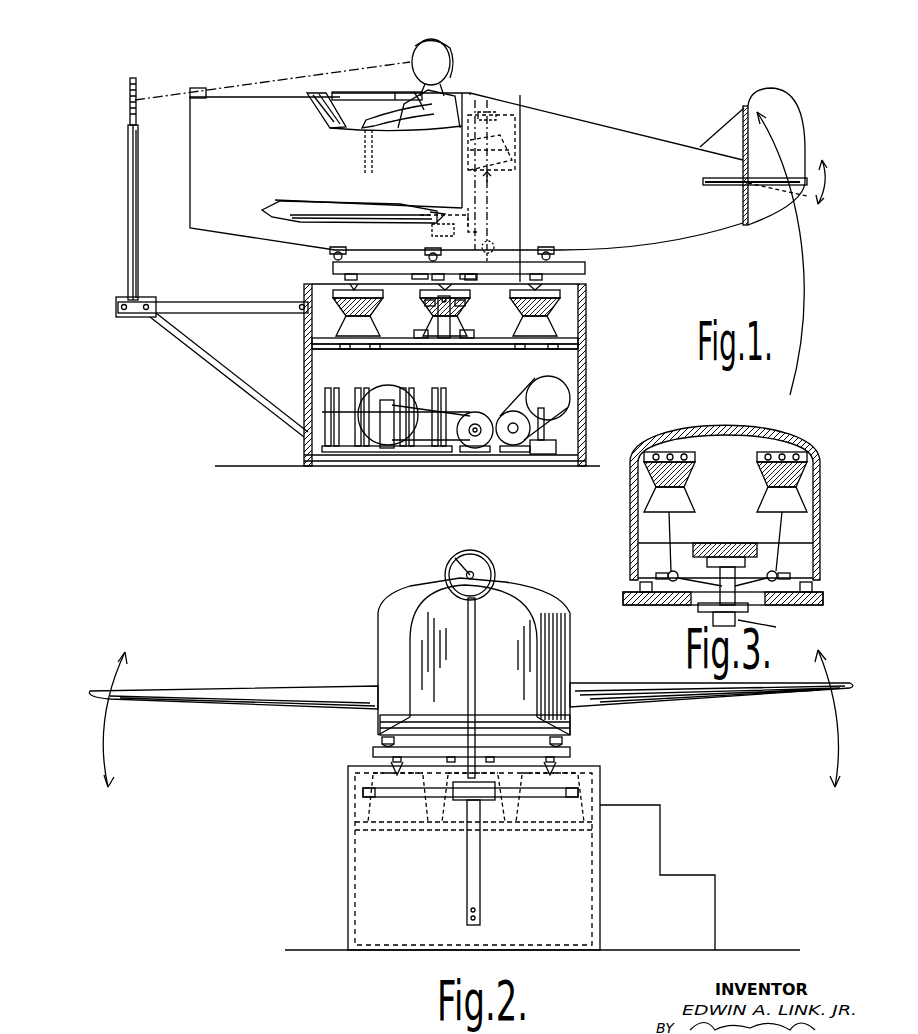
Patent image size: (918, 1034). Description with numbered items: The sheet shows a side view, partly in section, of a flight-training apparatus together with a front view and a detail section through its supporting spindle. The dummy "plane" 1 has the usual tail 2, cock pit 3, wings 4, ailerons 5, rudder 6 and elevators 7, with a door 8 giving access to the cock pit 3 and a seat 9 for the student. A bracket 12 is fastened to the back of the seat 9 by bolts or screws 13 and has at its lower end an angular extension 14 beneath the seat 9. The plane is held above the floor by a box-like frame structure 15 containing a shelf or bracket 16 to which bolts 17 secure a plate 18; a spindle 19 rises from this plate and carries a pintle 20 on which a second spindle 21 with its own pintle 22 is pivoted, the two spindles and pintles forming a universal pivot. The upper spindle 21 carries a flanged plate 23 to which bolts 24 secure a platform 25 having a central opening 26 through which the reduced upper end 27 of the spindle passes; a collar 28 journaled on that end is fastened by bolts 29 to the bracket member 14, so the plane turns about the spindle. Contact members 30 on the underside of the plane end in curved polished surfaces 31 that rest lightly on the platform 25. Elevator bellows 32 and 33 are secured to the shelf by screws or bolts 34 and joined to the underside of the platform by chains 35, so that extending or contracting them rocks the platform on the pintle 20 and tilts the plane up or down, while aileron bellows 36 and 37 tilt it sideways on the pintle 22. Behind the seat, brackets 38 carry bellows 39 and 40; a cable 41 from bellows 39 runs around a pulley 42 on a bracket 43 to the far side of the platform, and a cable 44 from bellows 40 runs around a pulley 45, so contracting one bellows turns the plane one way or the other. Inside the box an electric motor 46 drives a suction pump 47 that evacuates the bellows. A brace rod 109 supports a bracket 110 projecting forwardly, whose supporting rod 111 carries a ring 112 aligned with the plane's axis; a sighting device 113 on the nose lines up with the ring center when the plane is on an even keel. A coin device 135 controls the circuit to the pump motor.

In FIG. 1, the plane 1 is at (245, 228).
In FIG. 3, the plane 1 is at (632, 548).
In FIG. 2, the plane 1 is at (415, 686).
In FIG. 1, the tail 2 is at (707, 148).
In FIG. 1, the cock pit 3 is at (385, 92).
In FIG. 1, the wings 4 is at (298, 206).
In FIG. 2, the wings 4 is at (258, 690).
In FIG. 1, the ailerons 5 is at (392, 218).
In FIG. 1, the rudder 6 is at (792, 108).
In FIG. 1, the elevators 7 is at (777, 188).
In FIG. 1, the door 8 is at (455, 181).
In FIG. 1, the seat 9 is at (428, 212).
In FIG. 1, the bracket 12 is at (510, 140).
In FIG. 1, the bolts or screws 13 is at (482, 81).
In FIG. 1, the angular extension 14 is at (472, 215).
In FIG. 3, the angular extension 14 is at (740, 543).
In FIG. 1, the box-like frame structure 15 is at (587, 306).
In FIG. 1, the shelf or bracket 16 is at (500, 350).
In FIG. 2, the shelf or bracket 16 is at (360, 838).
In FIG. 1, the bolts 17 is at (418, 338).
In FIG. 1, the plate 18 is at (470, 338).
In FIG. 1, the spindle 19 is at (442, 326).
In FIG. 1, the pintle 20 is at (432, 312).
In FIG. 1, the second spindle 21 is at (462, 302).
In FIG. 1, the pintle 22 is at (426, 304).
In FIG. 1, the flanged plate 23 is at (416, 280).
In FIG. 1, the bolts 24 is at (470, 282).
In FIG. 1, the platform 25 is at (560, 272).
In FIG. 3, the platform 25 is at (793, 606).
In FIG. 1, the opening 26 is at (498, 262).
In FIG. 1, the reduced upper end 27 is at (490, 242).
In FIG. 3, the reduced upper end 27 is at (728, 590).
In FIG. 1, the collar 28 is at (440, 232).
In FIG. 3, the collar 28 is at (736, 576).
In FIG. 3, the bolts 29 is at (710, 565).
In FIG. 1, the contact members 30 is at (330, 250).
In FIG. 2, the contact members 30 is at (380, 739).
In FIG. 1, the curved polished surfaces 31 is at (333, 266).
In FIG. 2, the curved polished surfaces 31 is at (373, 751).
In FIG. 1, the bellows 32 is at (360, 324).
In FIG. 2, the bellows 32 is at (432, 832).
In FIG. 1, the bellows 33 is at (540, 322).
In FIG. 1, the screws or bolts 34 is at (378, 350).
In FIG. 1, the chains 35 is at (340, 289).
In FIG. 1, the bellows 36 is at (462, 326).
In FIG. 2, the bellows 36 is at (355, 782).
In FIG. 2, the bellows 37 is at (600, 772).
In FIG. 1, the brackets 38 is at (496, 113).
In FIG. 3, the brackets 38 is at (668, 454).
In FIG. 1, the bellows 39 is at (508, 137).
In FIG. 3, the bellows 39 is at (660, 487).
In FIG. 3, the bellows 40 is at (794, 496).
In FIG. 3, the cable 41 is at (671, 535).
In FIG. 3, the pulley 42 is at (679, 576).
In FIG. 3, the bracket 43 is at (666, 575).
In FIG. 3, the cable 44 is at (779, 535).
In FIG. 3, the pulley 45 is at (776, 575).
In FIG. 1, the electric motor 46 is at (470, 448).
In FIG. 3, the electric motor 46 is at (778, 575).
In FIG. 1, the suction pump 47 is at (376, 438).
In FIG. 1, the brace rod 109 is at (224, 372).
In FIG. 2, the brace rod 109 is at (470, 860).
In FIG. 1, the bracket 110 is at (248, 313).
In FIG. 1, the supporting rod 111 is at (137, 185).
In FIG. 2, the supporting rod 111 is at (475, 660).
In FIG. 1, the ring 112 is at (132, 102).
In FIG. 2, the ring 112 is at (492, 566).
In FIG. 1, the sighting device 113 is at (198, 88).
In FIG. 2, the sighting device 113 is at (467, 574).
In FIG. 1, the coin device 135 is at (346, 108).